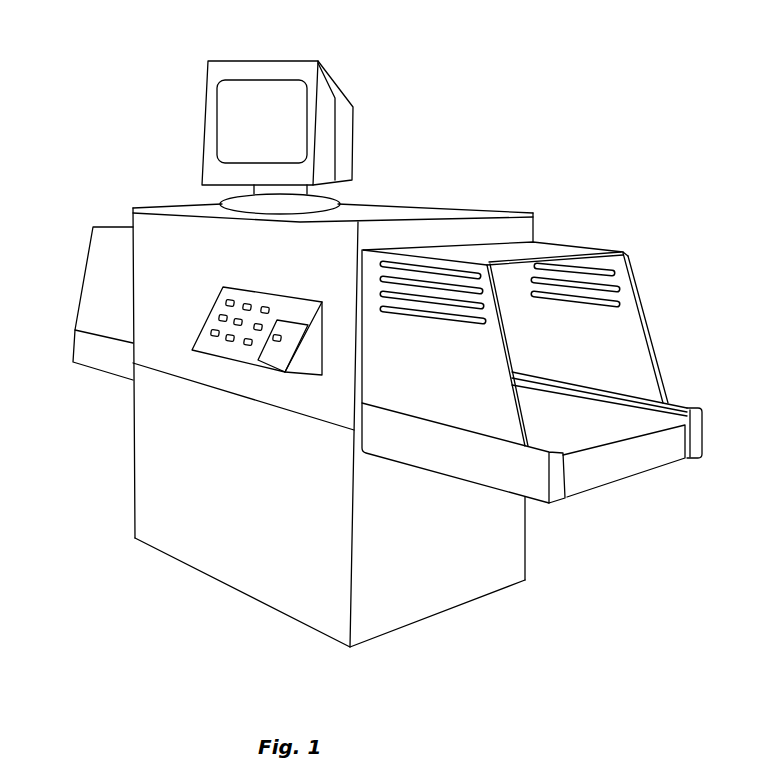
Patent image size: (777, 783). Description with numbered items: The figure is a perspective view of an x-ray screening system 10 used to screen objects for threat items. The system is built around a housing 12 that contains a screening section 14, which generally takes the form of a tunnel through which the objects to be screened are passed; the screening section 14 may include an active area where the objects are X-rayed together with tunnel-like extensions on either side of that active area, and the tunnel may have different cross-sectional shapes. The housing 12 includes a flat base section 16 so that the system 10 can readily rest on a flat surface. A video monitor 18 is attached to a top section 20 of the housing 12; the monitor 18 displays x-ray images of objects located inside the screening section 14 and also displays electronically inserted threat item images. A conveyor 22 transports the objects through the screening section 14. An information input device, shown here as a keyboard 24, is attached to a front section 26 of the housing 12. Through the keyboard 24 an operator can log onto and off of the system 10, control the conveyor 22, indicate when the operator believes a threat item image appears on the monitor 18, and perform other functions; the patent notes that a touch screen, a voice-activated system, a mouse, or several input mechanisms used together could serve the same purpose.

The x-ray screening system 10 is at (482, 96).
The housing 12 is at (131, 207).
The screening section 14 is at (574, 345).
The flat base section 16 is at (220, 585).
The video monitor 18 is at (248, 72).
The top section 20 is at (378, 214).
The conveyor 22 is at (612, 420).
The keyboard 24 is at (227, 350).
The front section 26 is at (165, 296).